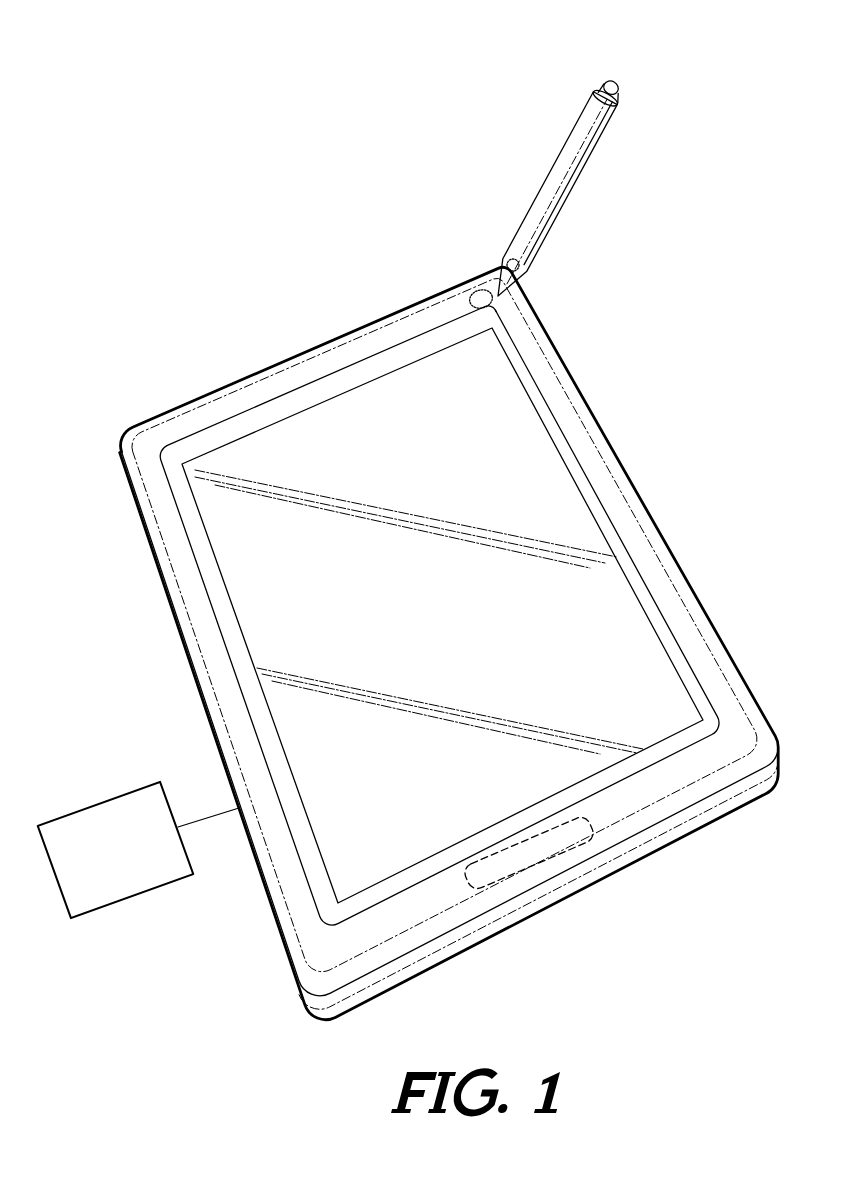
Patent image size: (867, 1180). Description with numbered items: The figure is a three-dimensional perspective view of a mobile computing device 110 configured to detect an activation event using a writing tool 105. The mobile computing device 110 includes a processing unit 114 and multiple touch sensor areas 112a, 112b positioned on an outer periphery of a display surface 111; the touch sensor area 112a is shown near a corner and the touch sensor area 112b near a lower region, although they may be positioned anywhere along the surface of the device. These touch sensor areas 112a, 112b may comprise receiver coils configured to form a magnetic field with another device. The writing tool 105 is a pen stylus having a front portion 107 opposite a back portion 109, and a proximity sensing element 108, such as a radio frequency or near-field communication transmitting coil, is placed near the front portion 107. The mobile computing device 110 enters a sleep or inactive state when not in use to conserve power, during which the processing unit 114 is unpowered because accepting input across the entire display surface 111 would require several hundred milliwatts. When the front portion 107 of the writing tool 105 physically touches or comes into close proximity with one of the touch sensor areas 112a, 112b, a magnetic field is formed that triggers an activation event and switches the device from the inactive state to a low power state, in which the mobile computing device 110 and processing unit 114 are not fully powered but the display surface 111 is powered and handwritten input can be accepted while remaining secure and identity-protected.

The writing tool 105 is at (558, 156).
The front portion 107 is at (507, 303).
The proximity sensing element 108 is at (507, 263).
The back portion 109 is at (622, 98).
The mobile computing device 110 is at (218, 390).
The display surface 111 is at (206, 523).
The touch sensor area 112a is at (482, 309).
The touch sensor area 112b is at (480, 863).
The processing unit 114 is at (145, 783).